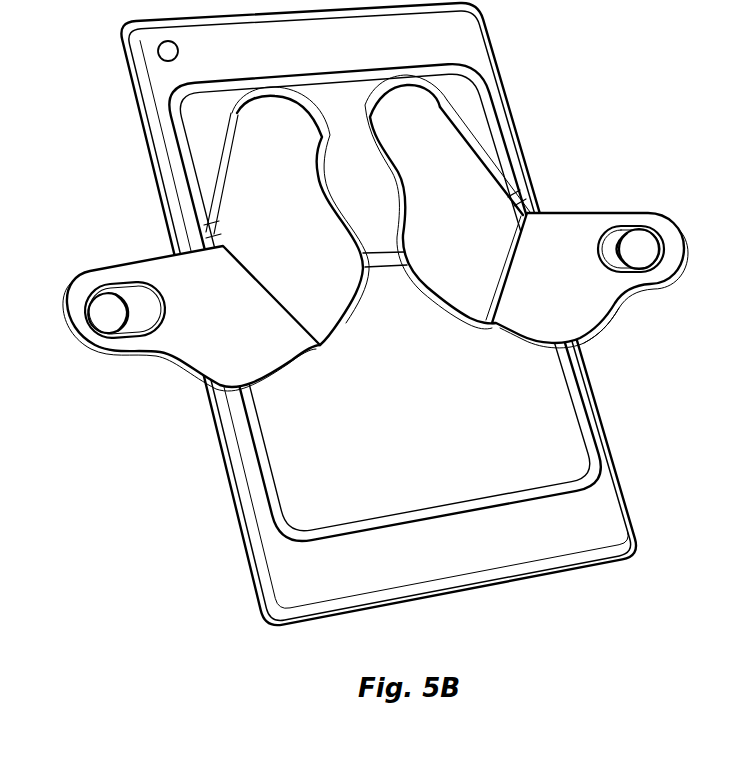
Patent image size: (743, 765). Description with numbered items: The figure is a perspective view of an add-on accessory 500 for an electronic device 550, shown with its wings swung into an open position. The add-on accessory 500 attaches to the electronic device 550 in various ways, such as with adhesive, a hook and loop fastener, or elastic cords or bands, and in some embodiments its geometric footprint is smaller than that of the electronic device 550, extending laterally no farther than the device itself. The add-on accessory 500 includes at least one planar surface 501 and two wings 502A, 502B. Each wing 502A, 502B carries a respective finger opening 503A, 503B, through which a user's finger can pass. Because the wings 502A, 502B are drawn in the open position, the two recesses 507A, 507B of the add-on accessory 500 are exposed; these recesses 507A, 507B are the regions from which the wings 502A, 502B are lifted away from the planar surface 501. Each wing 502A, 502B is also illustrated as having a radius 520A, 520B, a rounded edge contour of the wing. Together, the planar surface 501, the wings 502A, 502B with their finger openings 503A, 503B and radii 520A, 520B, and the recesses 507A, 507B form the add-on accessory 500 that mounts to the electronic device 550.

The add-on accessory 500 is at (548, 402).
The planar surface 501 is at (560, 460).
The wing 502A is at (614, 261).
The wing 502B is at (170, 314).
The finger opening 503A is at (647, 250).
The finger opening 503B is at (102, 313).
The recess 507A is at (427, 130).
The recess 507B is at (263, 130).
The radius 520A is at (615, 306).
The radius 520B is at (166, 358).
The electronic device 550 is at (263, 495).